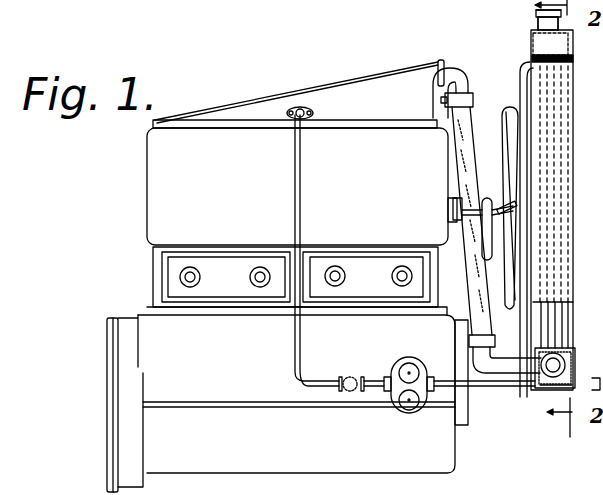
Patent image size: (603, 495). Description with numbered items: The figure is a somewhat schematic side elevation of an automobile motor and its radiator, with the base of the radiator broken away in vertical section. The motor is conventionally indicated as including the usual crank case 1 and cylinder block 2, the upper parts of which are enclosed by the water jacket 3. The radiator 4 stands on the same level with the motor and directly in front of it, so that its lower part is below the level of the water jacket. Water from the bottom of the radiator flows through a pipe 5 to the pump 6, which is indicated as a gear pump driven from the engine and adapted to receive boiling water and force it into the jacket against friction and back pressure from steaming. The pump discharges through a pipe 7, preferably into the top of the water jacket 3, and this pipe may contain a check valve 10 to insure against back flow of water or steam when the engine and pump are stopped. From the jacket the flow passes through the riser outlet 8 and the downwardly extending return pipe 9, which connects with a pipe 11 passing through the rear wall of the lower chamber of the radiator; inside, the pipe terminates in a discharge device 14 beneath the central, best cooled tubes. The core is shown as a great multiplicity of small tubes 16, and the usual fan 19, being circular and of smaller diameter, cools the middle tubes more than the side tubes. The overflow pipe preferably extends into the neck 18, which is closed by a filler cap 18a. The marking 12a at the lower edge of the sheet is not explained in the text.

The crank case 1 is at (170, 328).
The cylinder block 2 is at (152, 270).
The water jacket 3 is at (170, 188).
The radiator 4 is at (572, 200).
The pipe 5 is at (502, 388).
The pump 6 is at (412, 403).
The pipe 7 is at (288, 345).
The riser outlet 8 is at (314, 91).
The return pipe 9 is at (466, 181).
The check valve 10 is at (345, 380).
The pipe 11 is at (538, 390).
The frame member 12a is at (423, 488).
The discharge device 14 is at (547, 385).
The tubes 16 is at (563, 322).
The neck 18 is at (528, 28).
The filler cap 18a is at (537, 13).
The fan 19 is at (500, 113).